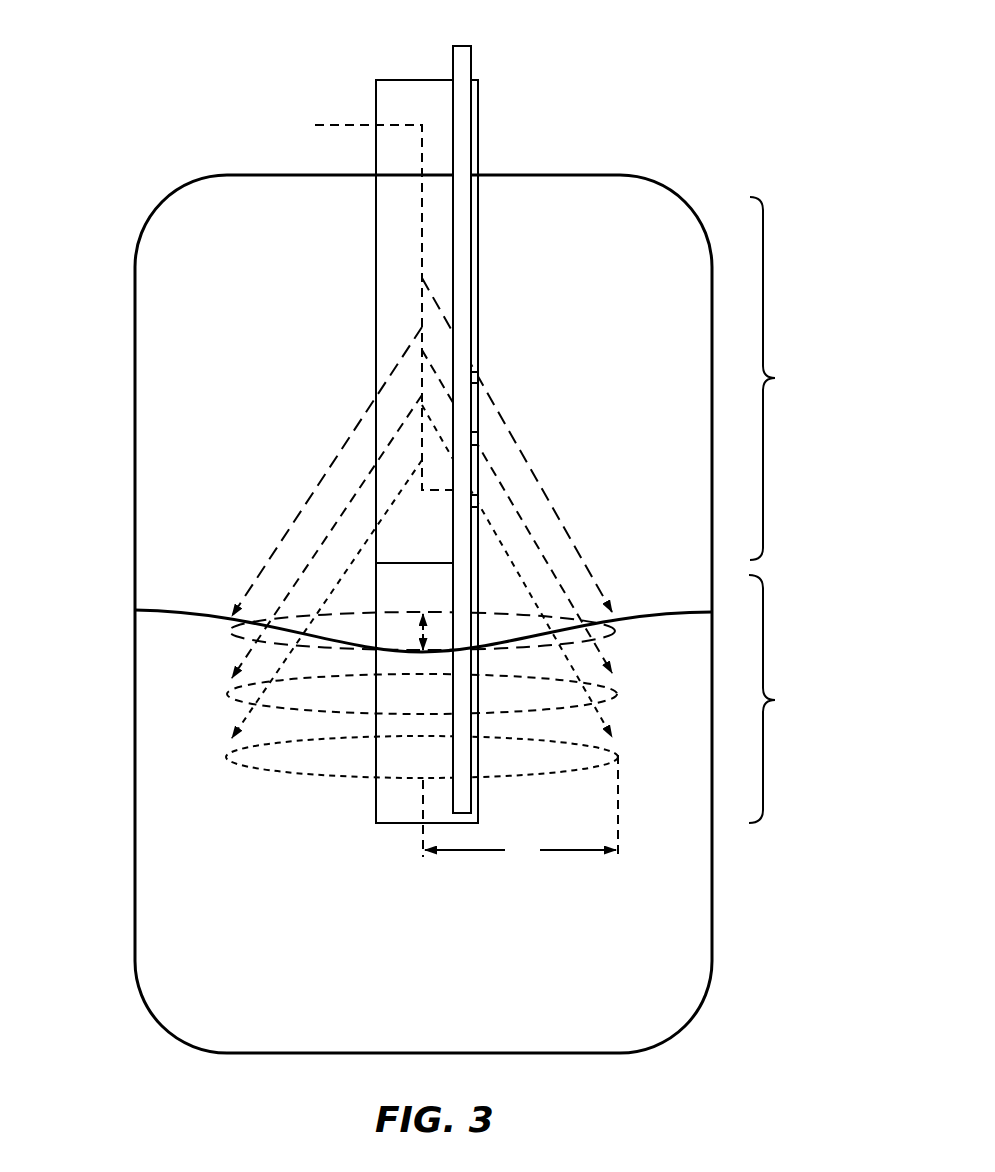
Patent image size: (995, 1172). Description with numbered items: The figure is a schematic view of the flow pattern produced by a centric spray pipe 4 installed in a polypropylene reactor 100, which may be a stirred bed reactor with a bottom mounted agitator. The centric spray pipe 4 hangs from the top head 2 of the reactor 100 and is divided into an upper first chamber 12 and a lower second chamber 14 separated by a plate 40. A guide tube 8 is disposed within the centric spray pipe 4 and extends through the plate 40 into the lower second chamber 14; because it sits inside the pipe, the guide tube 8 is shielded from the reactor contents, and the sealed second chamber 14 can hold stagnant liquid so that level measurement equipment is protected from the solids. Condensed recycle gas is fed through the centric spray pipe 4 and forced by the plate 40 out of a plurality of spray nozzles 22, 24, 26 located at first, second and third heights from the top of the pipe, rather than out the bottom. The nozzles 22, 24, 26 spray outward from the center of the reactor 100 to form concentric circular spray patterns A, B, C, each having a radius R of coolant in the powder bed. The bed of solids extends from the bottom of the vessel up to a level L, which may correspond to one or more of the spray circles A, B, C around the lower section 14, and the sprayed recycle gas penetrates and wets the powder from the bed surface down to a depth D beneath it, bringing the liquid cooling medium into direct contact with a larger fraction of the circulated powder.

The polypropylene reactor 100 is at (684, 53).
The top head 2 is at (538, 175).
The centric spray pipe 4 is at (480, 127).
The guide tube 8 is at (447, 108).
The first chamber 12 is at (788, 378).
The second chamber 14 is at (788, 699).
The spray nozzles 22 is at (480, 377).
The spray nozzles 24 is at (480, 440).
The spray nozzles 26 is at (480, 503).
The plate 40 is at (410, 562).
The circular distribution of liquid A is at (218, 637).
The circular distribution of liquid B is at (218, 693).
The circular distribution of liquid C is at (218, 753).
The depth D is at (408, 632).
The radius R is at (520, 810).
The level L is at (423, 617).